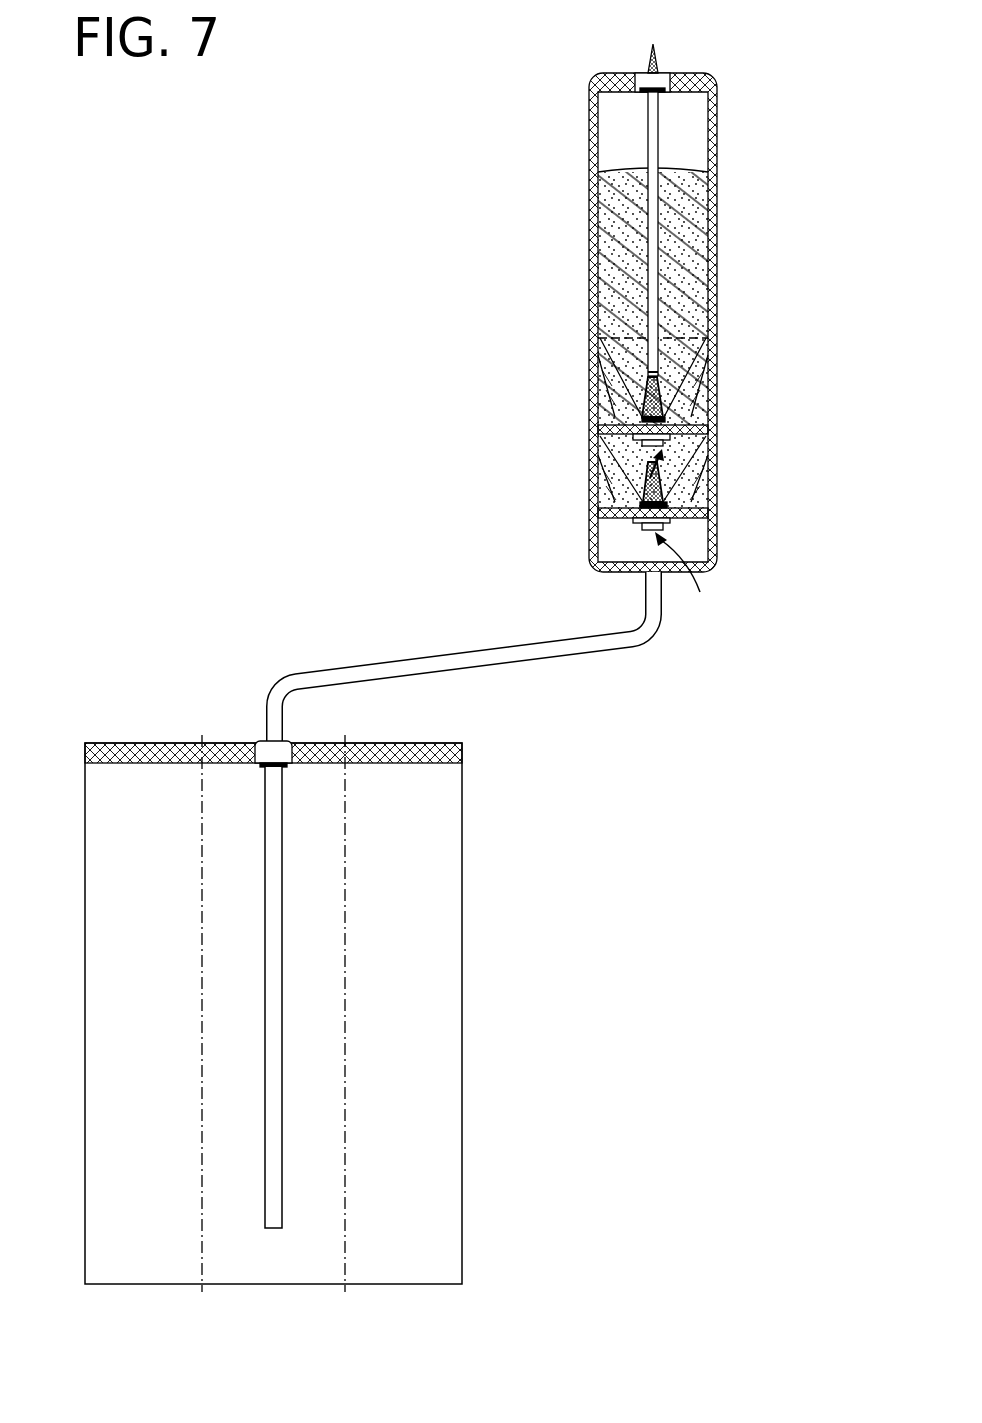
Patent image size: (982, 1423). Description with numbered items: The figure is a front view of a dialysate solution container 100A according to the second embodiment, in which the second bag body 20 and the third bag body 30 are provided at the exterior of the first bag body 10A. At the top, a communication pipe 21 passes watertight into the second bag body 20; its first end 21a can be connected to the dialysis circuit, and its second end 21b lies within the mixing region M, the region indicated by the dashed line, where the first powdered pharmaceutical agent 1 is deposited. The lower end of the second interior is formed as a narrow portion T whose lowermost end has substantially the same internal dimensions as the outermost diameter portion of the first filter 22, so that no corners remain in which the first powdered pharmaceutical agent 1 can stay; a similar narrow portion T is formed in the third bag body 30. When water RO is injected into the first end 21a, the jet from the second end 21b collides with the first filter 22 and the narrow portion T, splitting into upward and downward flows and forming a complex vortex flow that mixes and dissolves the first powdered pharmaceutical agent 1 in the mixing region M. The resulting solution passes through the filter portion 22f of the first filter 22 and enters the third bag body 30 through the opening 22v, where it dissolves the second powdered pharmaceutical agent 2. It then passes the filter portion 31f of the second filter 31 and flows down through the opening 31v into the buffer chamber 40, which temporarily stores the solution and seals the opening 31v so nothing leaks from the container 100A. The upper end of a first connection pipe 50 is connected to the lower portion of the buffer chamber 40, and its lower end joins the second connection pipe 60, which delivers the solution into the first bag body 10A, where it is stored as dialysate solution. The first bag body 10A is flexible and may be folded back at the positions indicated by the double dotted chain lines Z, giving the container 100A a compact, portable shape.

The dialysate solution container 100A is at (649, 313).
The second bag body 20 is at (719, 113).
The first powdered pharmaceutical agent 1 is at (688, 197).
The mixing region M is at (688, 356).
The narrow portion T is at (700, 376).
The communication pipe 21 is at (588, 193).
The first end 21a is at (655, 46).
The second end 21b is at (612, 378).
The first filter 22 is at (744, 399).
The filter portion 22f is at (660, 400).
The second powdered pharmaceutical agent 2 is at (716, 431).
The opening 22v is at (662, 458).
The second filter 31 is at (733, 485).
The filter portion 31f is at (662, 481).
The third bag body 30 is at (716, 512).
The opening 31v is at (678, 568).
The buffer chamber 40 is at (714, 549).
The first connection pipe 50 is at (411, 658).
The second connection pipe 60 is at (283, 897).
The first bag body 10A is at (315, 1037).
The double dotted chain lines Z is at (345, 1302).